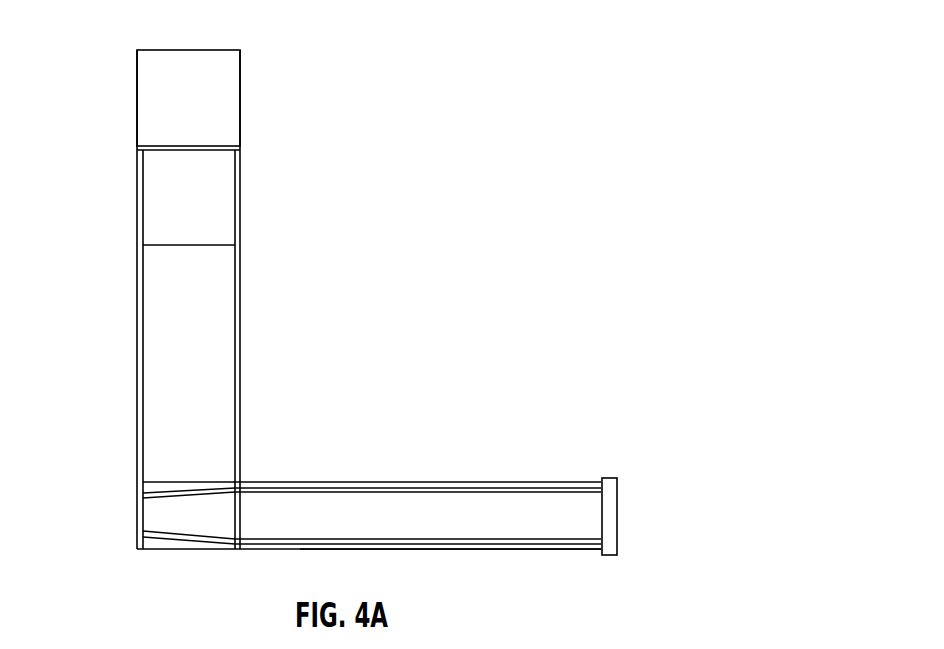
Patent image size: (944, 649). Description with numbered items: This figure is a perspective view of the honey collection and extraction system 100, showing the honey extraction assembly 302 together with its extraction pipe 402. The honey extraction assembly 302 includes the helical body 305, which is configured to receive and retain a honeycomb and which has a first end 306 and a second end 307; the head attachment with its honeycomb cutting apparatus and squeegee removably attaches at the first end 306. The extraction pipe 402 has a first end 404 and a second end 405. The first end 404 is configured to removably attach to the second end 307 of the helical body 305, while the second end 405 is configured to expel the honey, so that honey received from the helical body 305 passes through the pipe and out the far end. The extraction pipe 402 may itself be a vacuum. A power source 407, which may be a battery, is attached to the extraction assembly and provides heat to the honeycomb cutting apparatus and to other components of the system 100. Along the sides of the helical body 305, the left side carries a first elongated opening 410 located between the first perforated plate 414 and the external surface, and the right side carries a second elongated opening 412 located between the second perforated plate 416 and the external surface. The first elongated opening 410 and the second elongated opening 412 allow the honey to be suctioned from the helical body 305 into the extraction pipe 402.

The system 100 is at (637, 112).
The honey extraction assembly 302 is at (652, 146).
The helical body 305 is at (560, 448).
The first end 306 is at (450, 566).
The second end 307 is at (145, 483).
The extraction pipe 402 is at (147, 327).
The first end 404 is at (145, 514).
The second end 405 is at (144, 160).
The power source 407 is at (238, 99).
The first elongated opening 410 is at (328, 471).
The second elongated opening 412 is at (561, 560).
The first perforated plate 414 is at (381, 479).
The second perforated plate 416 is at (494, 553).